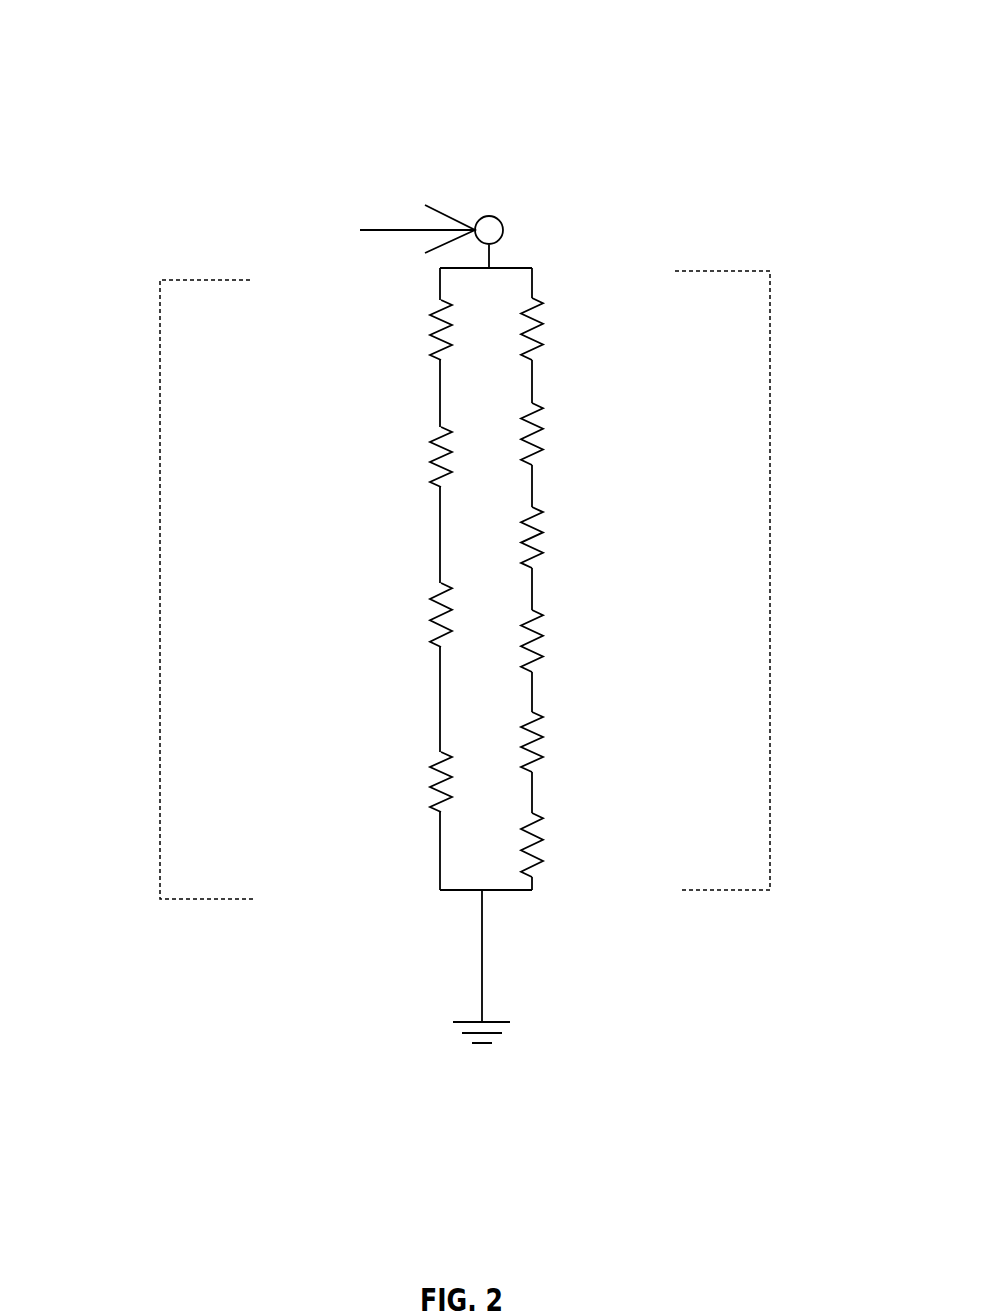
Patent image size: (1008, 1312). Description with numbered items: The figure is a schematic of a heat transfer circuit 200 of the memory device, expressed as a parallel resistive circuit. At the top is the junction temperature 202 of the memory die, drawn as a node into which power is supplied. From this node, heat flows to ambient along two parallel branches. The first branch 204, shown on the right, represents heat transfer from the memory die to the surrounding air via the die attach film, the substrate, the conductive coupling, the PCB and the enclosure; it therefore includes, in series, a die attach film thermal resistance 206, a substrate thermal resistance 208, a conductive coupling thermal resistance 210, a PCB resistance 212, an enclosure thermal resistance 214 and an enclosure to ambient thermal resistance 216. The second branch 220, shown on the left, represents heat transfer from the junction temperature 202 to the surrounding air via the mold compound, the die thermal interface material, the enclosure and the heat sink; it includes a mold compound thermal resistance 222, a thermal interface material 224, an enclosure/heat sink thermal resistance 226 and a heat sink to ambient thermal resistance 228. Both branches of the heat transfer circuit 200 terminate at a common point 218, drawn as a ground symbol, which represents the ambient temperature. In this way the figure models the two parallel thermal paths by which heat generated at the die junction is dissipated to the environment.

The heat transfer circuit 200 is at (710, 85).
The junction temperature 202 is at (487, 213).
The first branch 204 is at (770, 271).
The die attach film thermal resistance 206 is at (543, 303).
The substrate thermal resistance 208 is at (545, 422).
The conductive coupling thermal resistance 210 is at (545, 510).
The PCB resistance 212 is at (545, 613).
The enclosure thermal resistance 214 is at (545, 715).
The enclosure to ambient thermal resistance 216 is at (545, 817).
The common point 218 is at (498, 1032).
The second branch 220 is at (160, 280).
The mold compound thermal resistance 222 is at (430, 347).
The thermal interface material 224 is at (433, 483).
The enclosure/heat sink thermal resistance 226 is at (395, 638).
The heat sink to ambient thermal resistance 228 is at (433, 815).